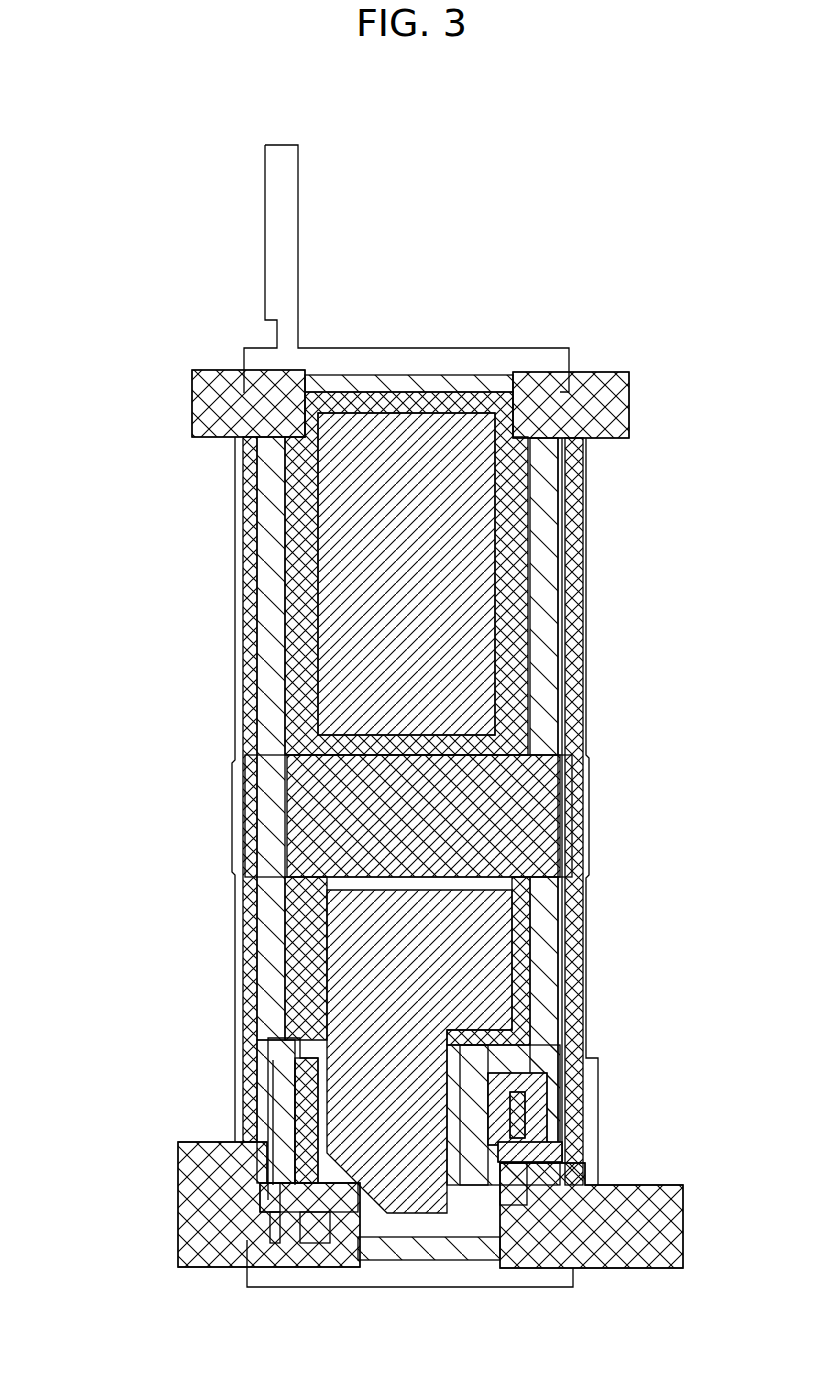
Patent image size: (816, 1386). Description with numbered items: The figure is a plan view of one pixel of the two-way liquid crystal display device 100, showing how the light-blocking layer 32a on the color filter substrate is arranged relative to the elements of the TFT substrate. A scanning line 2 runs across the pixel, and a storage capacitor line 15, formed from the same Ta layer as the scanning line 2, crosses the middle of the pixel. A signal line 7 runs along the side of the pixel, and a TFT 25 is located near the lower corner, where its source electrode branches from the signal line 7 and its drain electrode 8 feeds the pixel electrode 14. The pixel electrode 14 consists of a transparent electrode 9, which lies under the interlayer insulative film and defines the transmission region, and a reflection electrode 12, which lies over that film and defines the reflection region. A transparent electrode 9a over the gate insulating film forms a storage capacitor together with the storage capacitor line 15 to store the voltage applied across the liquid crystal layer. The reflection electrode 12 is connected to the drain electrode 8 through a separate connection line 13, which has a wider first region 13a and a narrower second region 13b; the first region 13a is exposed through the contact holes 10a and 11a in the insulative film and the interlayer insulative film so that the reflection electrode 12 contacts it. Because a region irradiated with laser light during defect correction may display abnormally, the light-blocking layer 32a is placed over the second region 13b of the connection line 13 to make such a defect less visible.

The liquid crystal display device 100 is at (601, 283).
The scanning line 2 is at (516, 358).
The light-blocking layer 32a is at (629, 403).
The reflection electrode 12 is at (550, 483).
The transparent electrode 9 is at (482, 530).
The transparent electrode 9a is at (488, 805).
The pixel electrode 14 is at (630, 462).
The storage capacitor line 15 is at (568, 846).
The signal line 7 is at (262, 1073).
The drain electrode 8 is at (300, 1192).
The TFT 25 is at (268, 1201).
The contact hole 10a is at (530, 1105).
The contact hole 11a is at (598, 1109).
The first region 13a is at (540, 1110).
The second region 13b is at (540, 1188).
The connection line 13 is at (670, 1092).